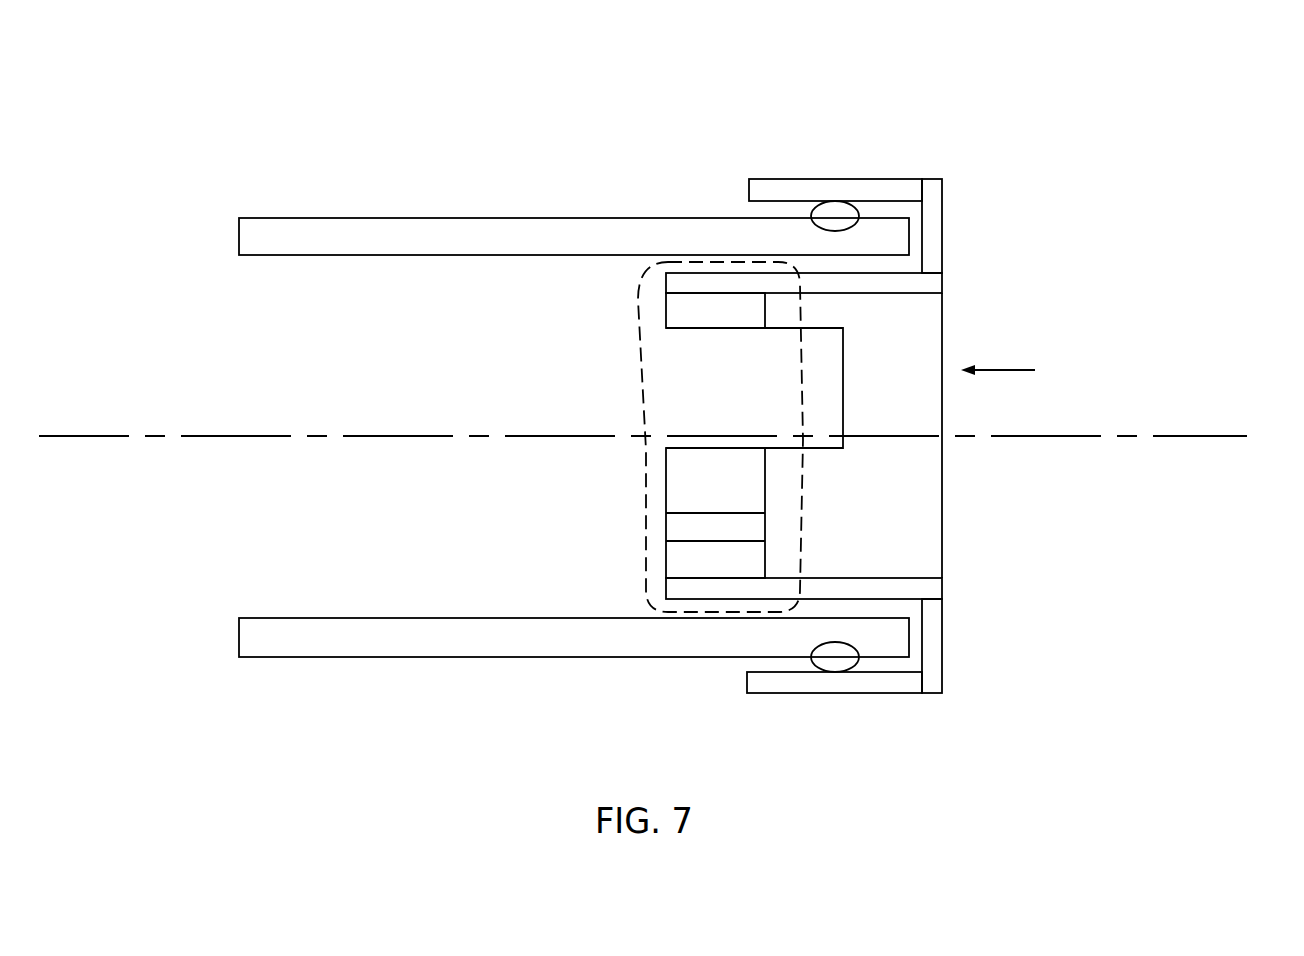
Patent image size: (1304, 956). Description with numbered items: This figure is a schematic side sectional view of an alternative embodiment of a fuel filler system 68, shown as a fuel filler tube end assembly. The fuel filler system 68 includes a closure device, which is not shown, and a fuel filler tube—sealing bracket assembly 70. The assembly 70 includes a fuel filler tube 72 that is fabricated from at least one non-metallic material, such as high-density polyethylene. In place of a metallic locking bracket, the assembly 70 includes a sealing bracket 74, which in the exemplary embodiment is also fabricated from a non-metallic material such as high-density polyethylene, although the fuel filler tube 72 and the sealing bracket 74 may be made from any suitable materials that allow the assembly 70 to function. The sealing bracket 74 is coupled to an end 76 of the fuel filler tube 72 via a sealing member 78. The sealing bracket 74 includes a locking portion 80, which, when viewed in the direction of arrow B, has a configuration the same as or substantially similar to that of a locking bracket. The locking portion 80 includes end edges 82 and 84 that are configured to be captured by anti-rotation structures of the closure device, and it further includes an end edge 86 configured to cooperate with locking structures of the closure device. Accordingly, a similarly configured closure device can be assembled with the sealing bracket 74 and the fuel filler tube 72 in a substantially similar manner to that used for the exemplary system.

The fuel filler system 68 is at (1070, 116).
The fuel filler tube—sealing bracket assembly 70 is at (936, 130).
The fuel filler tube 72 is at (480, 218).
The sealing bracket 74 is at (932, 216).
The end 76 is at (746, 231).
The sealing member 78 is at (838, 212).
The locking portion 80 is at (638, 313).
The end edge 82 is at (740, 448).
The end edge 84 is at (740, 328).
The end edge 86 is at (666, 496).